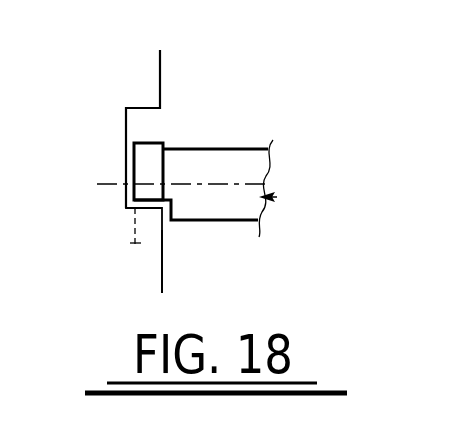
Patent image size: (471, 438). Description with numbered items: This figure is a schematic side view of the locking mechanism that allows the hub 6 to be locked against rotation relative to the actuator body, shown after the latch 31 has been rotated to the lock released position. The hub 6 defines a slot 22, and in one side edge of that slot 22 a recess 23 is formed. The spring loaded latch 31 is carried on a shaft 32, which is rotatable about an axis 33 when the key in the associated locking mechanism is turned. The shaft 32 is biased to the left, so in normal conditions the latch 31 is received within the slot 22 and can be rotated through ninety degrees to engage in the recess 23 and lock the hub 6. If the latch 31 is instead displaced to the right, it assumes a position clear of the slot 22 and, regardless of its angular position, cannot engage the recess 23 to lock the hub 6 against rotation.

The hub 6 is at (145, 97).
The slot 22 is at (147, 133).
The latch 31 is at (147, 177).
The shaft 32 is at (235, 223).
The axis 33 is at (277, 187).
The recess 23 is at (153, 247).